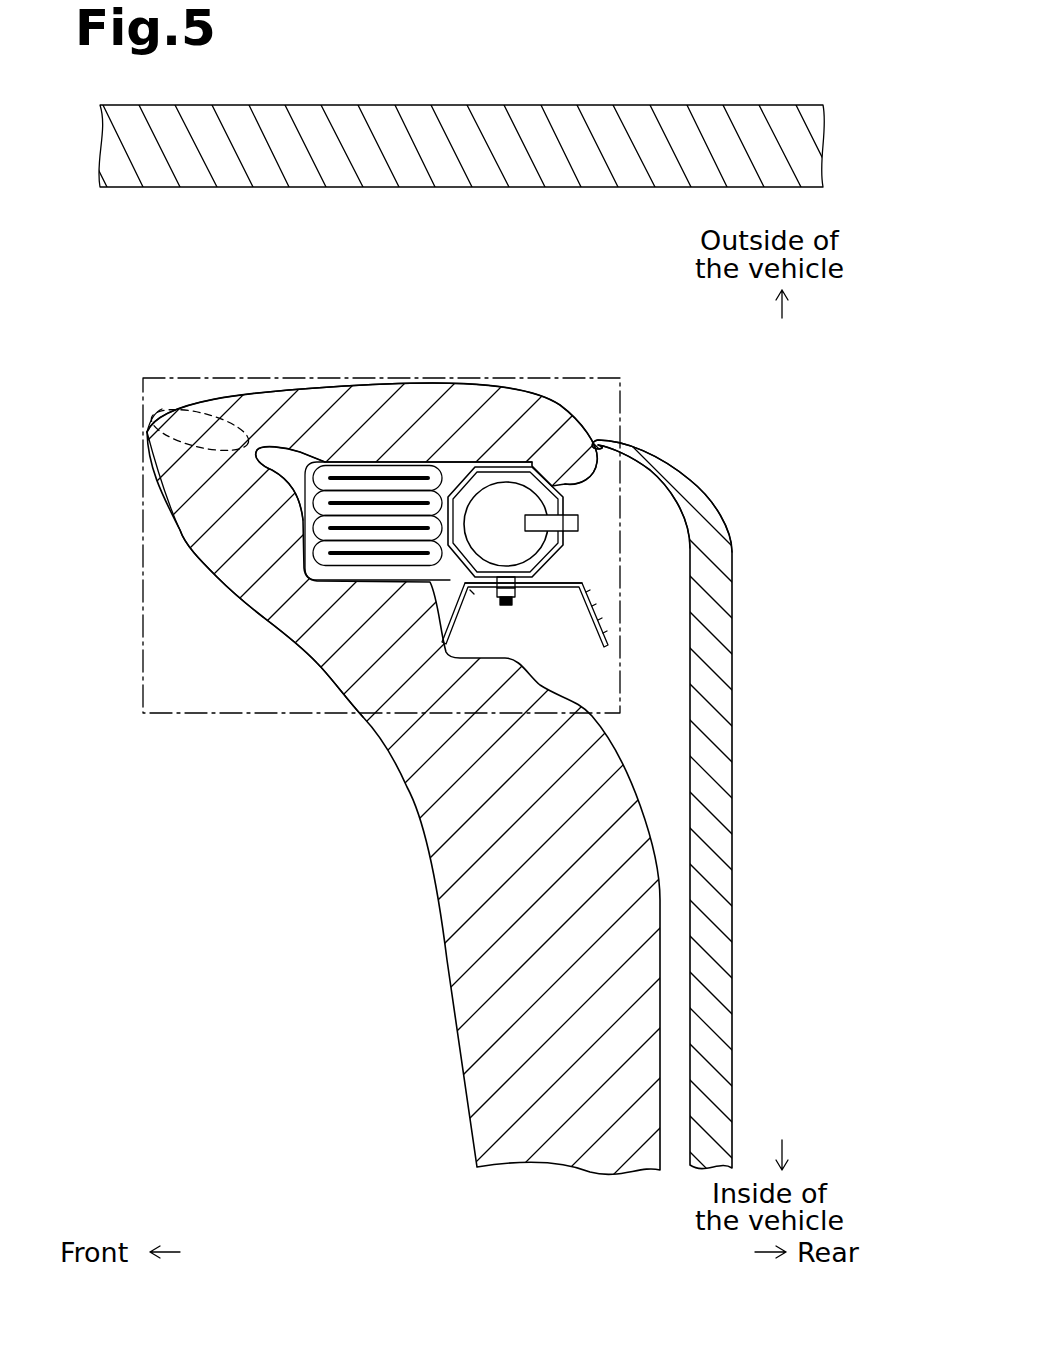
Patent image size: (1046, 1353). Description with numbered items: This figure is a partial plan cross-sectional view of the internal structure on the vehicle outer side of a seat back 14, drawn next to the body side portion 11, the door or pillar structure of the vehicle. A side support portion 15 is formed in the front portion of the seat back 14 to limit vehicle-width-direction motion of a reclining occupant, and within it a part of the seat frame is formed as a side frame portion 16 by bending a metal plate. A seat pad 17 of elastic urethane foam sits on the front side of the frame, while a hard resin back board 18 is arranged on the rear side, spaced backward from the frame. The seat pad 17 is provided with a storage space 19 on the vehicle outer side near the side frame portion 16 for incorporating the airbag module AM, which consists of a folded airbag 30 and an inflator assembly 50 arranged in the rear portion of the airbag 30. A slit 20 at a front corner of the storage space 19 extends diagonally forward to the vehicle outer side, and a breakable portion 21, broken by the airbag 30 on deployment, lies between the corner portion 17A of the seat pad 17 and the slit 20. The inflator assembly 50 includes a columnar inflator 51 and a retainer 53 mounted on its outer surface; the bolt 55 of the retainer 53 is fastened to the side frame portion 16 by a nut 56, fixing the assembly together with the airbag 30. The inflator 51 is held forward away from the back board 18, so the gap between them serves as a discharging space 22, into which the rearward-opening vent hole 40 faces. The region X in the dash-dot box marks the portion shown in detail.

The body side portion 11 is at (596, 188).
The seat back 14 is at (350, 888).
The side support portion 15 is at (222, 588).
The seat pad 17 is at (372, 550).
The corner portion 17A is at (148, 432).
The back board 18 is at (735, 773).
The storage space 19 is at (458, 465).
The slit 20 is at (275, 452).
The breakable portion 21 is at (208, 406).
The discharging space 22 is at (662, 512).
The airbag 30 is at (308, 525).
The vent hole 40 is at (580, 523).
The inflator assembly 50 is at (513, 467).
The inflator 51 is at (522, 490).
The retainer 53 is at (498, 470).
The bolt 55 is at (513, 602).
The nut 56 is at (492, 598).
The side frame portion 16 is at (603, 646).
The airbag module AM is at (571, 564).
The detail region X is at (240, 714).